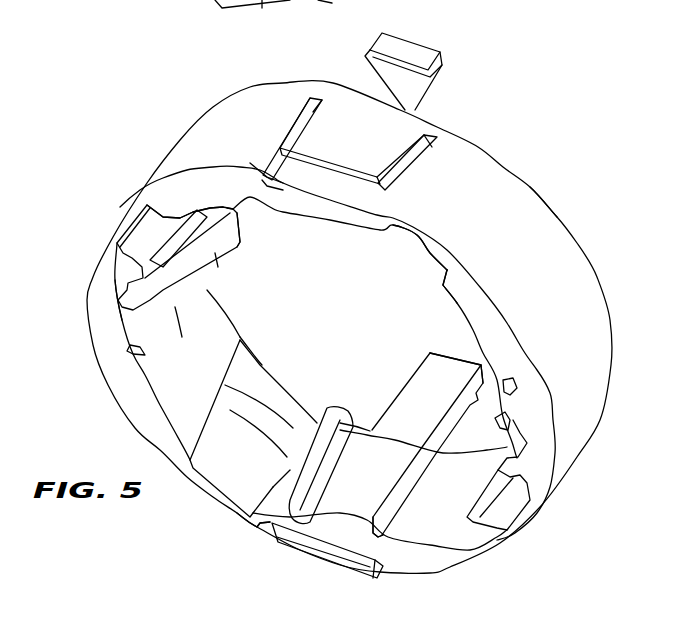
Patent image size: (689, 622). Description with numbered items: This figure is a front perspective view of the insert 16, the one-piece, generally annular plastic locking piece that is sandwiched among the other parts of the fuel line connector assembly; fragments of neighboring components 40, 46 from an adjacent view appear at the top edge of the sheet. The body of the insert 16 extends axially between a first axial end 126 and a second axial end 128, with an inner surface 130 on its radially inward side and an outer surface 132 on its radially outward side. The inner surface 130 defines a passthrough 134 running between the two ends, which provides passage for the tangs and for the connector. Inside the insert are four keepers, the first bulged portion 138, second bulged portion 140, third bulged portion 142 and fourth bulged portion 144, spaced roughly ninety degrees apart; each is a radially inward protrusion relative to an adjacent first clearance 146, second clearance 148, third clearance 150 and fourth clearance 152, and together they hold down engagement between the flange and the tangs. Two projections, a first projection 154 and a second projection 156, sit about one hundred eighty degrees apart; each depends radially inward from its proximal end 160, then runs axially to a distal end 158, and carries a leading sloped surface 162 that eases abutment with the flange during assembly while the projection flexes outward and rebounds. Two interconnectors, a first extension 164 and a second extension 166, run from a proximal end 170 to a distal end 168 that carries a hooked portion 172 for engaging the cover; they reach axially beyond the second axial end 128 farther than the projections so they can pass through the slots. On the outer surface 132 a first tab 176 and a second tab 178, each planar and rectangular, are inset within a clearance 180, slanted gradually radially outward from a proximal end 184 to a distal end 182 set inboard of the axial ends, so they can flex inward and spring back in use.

The insert 16 is at (530, 185).
The housing portion 40 is at (252, 17).
The housing portion 46 is at (331, 7).
The first axial end 126 is at (180, 482).
The second axial end 128 is at (578, 237).
The inner surface 130 is at (177, 393).
The outer surface 132 is at (605, 374).
The passthrough 134 is at (354, 329).
The first bulged portion 138 is at (213, 357).
The second bulged portion 140 is at (221, 204).
The third bulged portion 142 is at (455, 304).
The fourth bulged portion 144 is at (443, 500).
The first clearance 146 is at (247, 437).
The second clearance 148 is at (138, 232).
The third clearance 150 is at (428, 255).
The fourth clearance 152 is at (507, 511).
The first projection 154 is at (236, 250).
The second projection 156 is at (496, 421).
The distal end 158 is at (240, 227).
The proximal end 160 is at (137, 327).
The leading sloped surface 162 is at (177, 307).
The first extension 164 is at (434, 75).
The second extension 166 is at (407, 384).
The distal end 168 is at (459, 355).
The proximal end 170 is at (357, 523).
The hooked portion 172 is at (478, 388).
The first tab 176 is at (308, 109).
The second tab 178 is at (273, 528).
The clearance 180 is at (265, 525).
The distal end 182 is at (312, 164).
The proximal end 184 is at (380, 117).